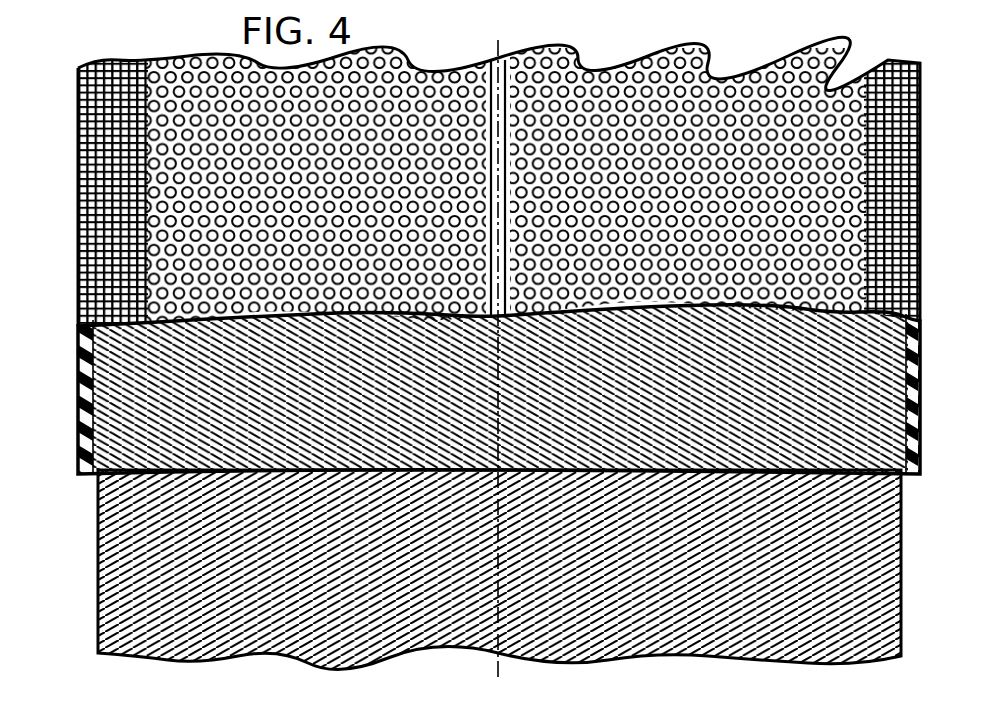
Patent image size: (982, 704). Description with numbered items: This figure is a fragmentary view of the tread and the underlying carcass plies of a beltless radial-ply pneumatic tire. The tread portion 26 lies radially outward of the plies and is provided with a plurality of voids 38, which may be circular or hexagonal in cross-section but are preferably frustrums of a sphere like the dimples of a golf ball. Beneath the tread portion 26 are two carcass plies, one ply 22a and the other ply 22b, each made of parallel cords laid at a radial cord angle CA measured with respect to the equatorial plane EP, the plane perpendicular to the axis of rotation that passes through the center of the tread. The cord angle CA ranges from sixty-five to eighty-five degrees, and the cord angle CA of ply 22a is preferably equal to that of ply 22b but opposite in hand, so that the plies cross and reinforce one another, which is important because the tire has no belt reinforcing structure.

The tread portion 26 is at (501, 174).
The voids 38 is at (613, 70).
The carcass ply 22b is at (146, 430).
The carcass ply 22a is at (760, 622).
The equatorial plane EP is at (501, 359).
The cord angle CA is at (503, 430).